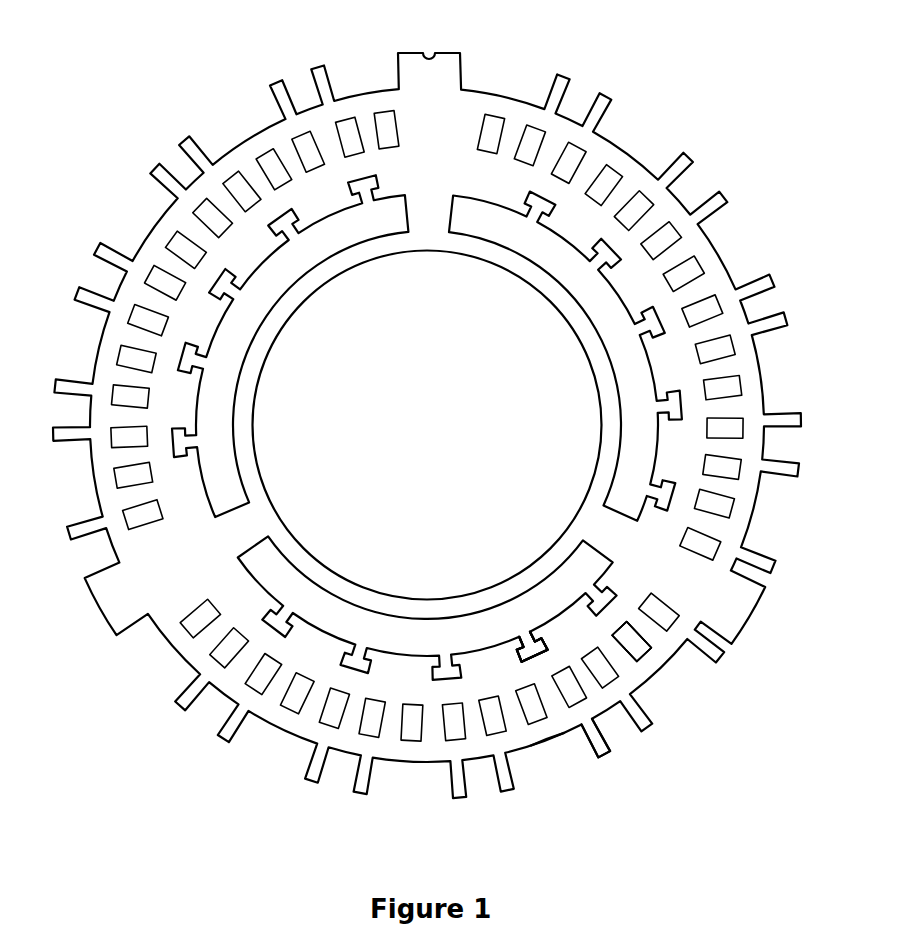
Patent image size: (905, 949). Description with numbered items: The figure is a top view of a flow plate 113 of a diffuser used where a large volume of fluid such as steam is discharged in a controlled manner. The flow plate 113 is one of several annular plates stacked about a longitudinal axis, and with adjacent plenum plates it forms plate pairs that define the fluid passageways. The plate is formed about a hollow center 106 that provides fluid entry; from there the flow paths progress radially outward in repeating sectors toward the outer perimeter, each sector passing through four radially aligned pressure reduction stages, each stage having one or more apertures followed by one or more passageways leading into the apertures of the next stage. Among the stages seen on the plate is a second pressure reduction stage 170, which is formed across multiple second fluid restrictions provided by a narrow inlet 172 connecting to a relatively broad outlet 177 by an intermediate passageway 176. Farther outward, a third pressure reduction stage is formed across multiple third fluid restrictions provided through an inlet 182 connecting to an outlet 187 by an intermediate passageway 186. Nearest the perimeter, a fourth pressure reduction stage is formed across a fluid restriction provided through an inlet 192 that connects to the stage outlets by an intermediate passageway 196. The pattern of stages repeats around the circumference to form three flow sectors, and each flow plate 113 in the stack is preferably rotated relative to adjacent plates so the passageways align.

The hollow center 106 is at (446, 401).
The flow plate 113 is at (692, 39).
The second pressure reduction stage 170 is at (513, 662).
The narrow inlet 172 is at (517, 657).
The intermediate passageway 176 is at (547, 627).
The outlet 177 is at (510, 658).
The inlet 182 is at (633, 630).
The intermediate passageway 186 is at (627, 652).
The outlet 187 is at (645, 655).
The inlet 192 is at (542, 729).
The intermediate passageway 196 is at (588, 742).